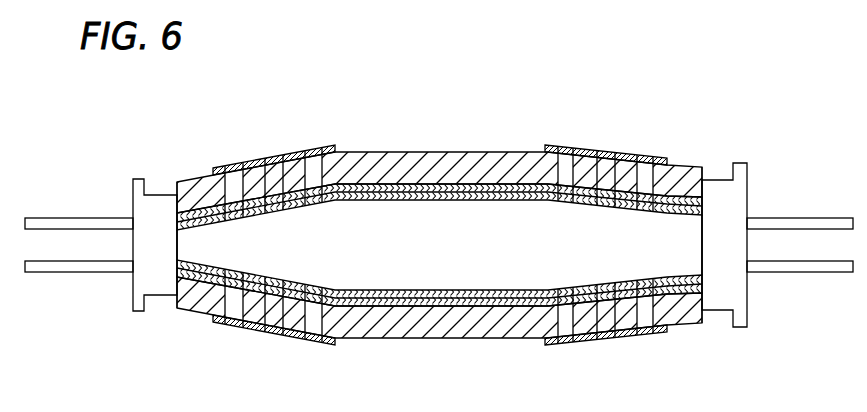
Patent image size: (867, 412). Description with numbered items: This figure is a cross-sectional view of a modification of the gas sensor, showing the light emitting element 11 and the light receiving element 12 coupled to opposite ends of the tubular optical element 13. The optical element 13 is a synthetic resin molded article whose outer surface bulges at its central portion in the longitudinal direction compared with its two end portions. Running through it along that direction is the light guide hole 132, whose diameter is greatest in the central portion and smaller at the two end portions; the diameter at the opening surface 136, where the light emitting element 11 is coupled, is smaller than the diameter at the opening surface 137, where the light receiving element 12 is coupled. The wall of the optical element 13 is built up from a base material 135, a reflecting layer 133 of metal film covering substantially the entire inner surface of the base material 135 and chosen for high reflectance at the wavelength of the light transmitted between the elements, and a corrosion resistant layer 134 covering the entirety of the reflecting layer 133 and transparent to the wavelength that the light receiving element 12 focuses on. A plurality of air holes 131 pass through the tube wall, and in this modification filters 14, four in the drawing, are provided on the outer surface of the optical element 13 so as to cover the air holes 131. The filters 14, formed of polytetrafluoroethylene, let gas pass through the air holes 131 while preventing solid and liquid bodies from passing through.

The light emitting element 11 is at (160, 202).
The light receiving element 12 is at (718, 182).
The optical element 13 is at (670, 157).
The filter 14 is at (588, 148).
The air hole 131 is at (268, 172).
The light guide hole 132 is at (662, 267).
The reflecting layer 133 is at (387, 183).
The corrosion resistant layer 134 is at (467, 197).
The base material 135 is at (438, 325).
The opening surface 136 is at (168, 291).
The opening surface 137 is at (726, 291).